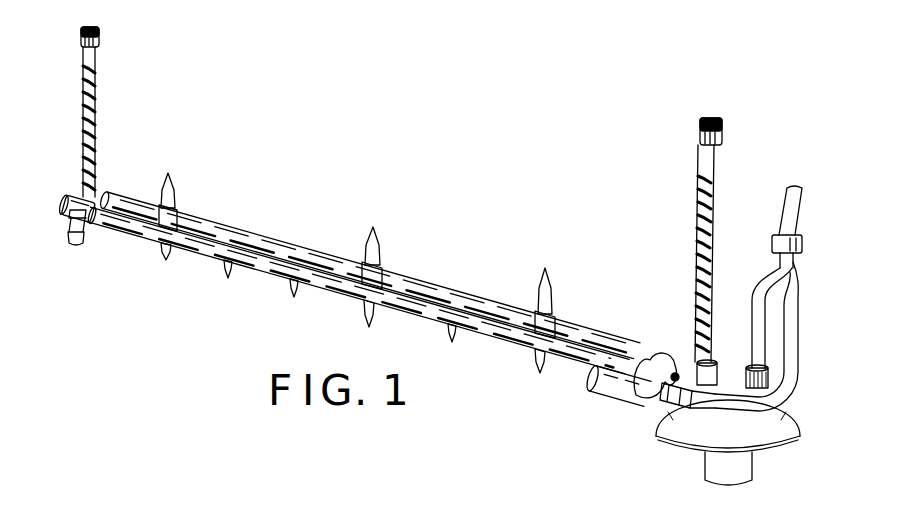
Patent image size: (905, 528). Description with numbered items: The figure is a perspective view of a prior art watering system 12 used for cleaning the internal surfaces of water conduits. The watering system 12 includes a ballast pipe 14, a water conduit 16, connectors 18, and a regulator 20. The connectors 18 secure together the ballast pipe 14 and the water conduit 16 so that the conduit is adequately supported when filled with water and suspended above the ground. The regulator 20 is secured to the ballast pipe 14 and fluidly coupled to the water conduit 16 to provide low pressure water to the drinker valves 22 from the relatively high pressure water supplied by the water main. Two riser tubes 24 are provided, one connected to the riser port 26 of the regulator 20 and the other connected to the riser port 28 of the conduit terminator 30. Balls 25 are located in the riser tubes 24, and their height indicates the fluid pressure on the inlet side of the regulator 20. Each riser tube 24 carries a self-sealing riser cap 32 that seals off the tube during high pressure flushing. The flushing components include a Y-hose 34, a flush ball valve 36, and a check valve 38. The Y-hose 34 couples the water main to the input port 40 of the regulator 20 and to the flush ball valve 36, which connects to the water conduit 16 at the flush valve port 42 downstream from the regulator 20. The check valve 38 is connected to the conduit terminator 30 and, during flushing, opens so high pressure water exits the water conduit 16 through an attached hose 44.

The watering system 12 is at (464, 165).
The ballast pipe 14 is at (265, 239).
The water conduit 16 is at (332, 283).
The connectors 18 is at (175, 196).
The regulator 20 is at (693, 437).
The drinker valves 22 is at (166, 262).
The riser tubes 24 is at (96, 57).
The balls 25 is at (97, 110).
The riser port 26 is at (707, 380).
The riser port 28 is at (95, 192).
The conduit terminator 30 is at (92, 220).
The self-sealing riser cap 32 is at (100, 38).
The Y-hose 34 is at (796, 263).
The flush ball valve 36 is at (650, 398).
The check valve 38 is at (88, 223).
The input port 40 is at (773, 395).
The flush valve port 42 is at (585, 371).
The hose 44 is at (75, 243).